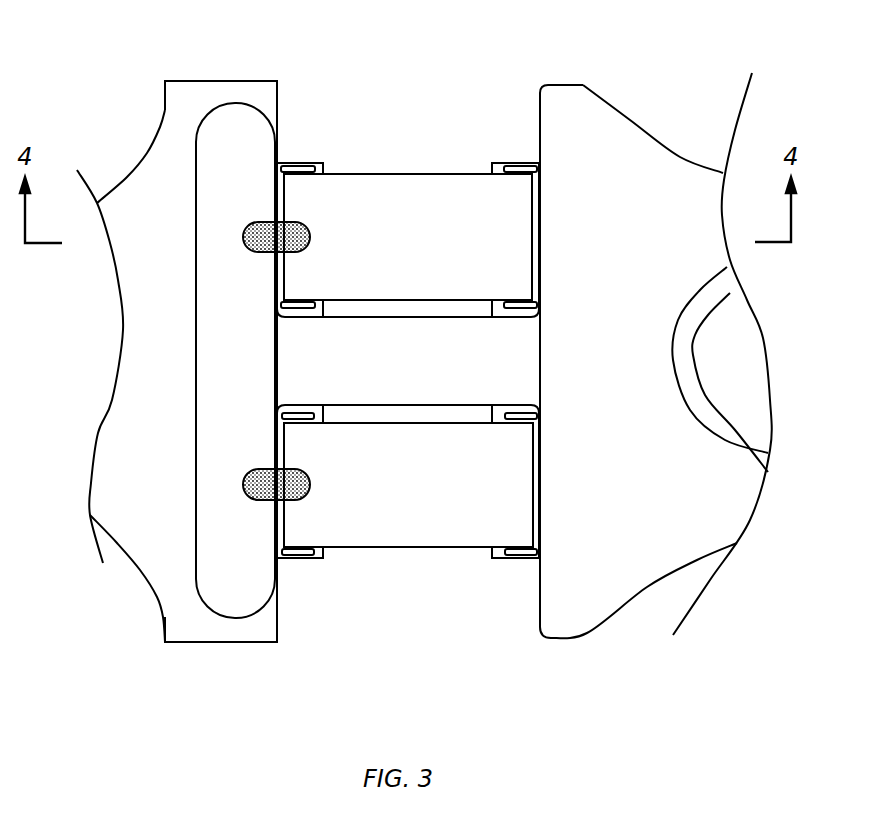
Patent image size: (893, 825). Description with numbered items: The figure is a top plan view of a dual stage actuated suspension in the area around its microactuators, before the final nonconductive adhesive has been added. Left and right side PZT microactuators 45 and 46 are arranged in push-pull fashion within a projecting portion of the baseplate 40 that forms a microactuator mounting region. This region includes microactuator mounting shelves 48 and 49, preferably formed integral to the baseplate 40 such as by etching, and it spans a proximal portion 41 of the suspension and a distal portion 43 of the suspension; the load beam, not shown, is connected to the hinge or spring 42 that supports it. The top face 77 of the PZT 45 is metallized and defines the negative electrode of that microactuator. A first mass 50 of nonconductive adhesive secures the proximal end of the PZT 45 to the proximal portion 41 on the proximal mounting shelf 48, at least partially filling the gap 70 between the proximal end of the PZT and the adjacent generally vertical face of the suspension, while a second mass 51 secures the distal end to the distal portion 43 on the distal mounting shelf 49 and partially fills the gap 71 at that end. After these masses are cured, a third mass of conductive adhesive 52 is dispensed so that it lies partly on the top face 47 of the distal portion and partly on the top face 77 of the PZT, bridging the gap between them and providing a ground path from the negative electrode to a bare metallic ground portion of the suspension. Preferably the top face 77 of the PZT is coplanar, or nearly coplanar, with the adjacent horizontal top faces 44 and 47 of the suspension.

The baseplate 40 is at (647, 587).
The proximal portion 41 is at (538, 687).
The hinge or spring 42 is at (140, 570).
The distal portion 43 is at (86, 686).
The top face 44 is at (588, 248).
The PZT microactuator 45 is at (399, 174).
The PZT microactuator 46 is at (408, 547).
The top face 47 is at (226, 206).
The proximal mounting shelf 48 is at (505, 160).
The distal mounting shelf 49 is at (320, 160).
The first mass of nonconductive adhesive 50 is at (530, 168).
The second mass of nonconductive adhesive 51 is at (292, 168).
The conductive adhesive 52 is at (243, 237).
The gap 70 is at (537, 200).
The gap 71 is at (278, 185).
The top face 77 is at (386, 246).